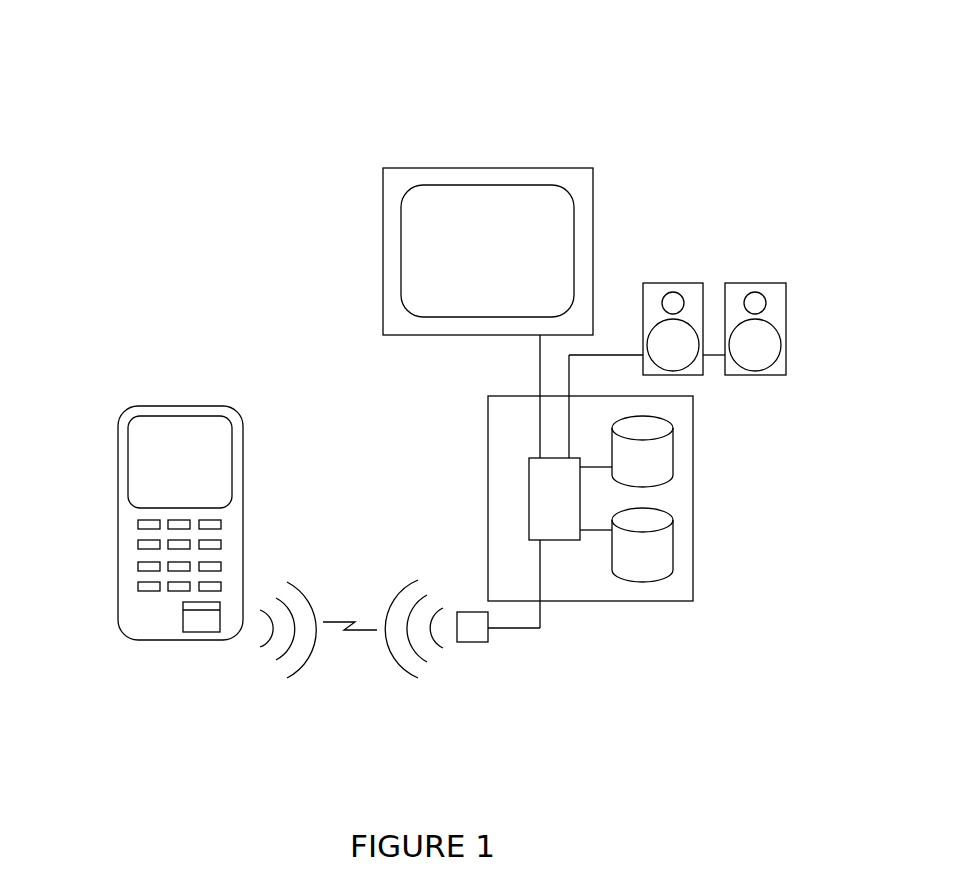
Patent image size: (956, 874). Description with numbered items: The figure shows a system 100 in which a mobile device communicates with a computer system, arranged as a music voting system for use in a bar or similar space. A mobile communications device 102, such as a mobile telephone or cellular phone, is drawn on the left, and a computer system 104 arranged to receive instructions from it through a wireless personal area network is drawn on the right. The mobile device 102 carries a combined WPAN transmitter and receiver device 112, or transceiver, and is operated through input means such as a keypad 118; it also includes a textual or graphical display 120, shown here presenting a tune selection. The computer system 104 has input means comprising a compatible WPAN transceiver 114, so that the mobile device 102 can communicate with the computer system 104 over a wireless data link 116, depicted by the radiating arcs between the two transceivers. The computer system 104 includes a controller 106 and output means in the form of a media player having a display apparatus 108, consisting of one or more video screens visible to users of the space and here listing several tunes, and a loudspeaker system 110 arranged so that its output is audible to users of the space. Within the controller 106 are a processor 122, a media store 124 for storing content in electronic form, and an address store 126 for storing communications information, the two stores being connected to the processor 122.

The system 100 is at (239, 166).
The mobile communications device 102 is at (198, 518).
The computer system 104 is at (708, 105).
The controller 106 is at (595, 547).
The display apparatus 108 is at (493, 177).
The loudspeaker system 110 is at (735, 293).
The transmitter and receiver device 112 is at (203, 622).
The WPAN transceiver 114 is at (473, 628).
The wireless data link 116 is at (348, 604).
The keypad 118 is at (153, 545).
The display 120 is at (212, 488).
The processor 122 is at (550, 492).
The media store 124 is at (643, 467).
The address store 126 is at (643, 558).